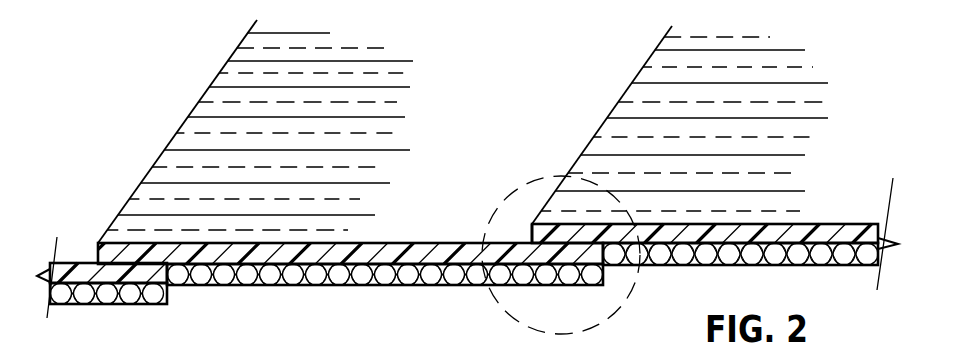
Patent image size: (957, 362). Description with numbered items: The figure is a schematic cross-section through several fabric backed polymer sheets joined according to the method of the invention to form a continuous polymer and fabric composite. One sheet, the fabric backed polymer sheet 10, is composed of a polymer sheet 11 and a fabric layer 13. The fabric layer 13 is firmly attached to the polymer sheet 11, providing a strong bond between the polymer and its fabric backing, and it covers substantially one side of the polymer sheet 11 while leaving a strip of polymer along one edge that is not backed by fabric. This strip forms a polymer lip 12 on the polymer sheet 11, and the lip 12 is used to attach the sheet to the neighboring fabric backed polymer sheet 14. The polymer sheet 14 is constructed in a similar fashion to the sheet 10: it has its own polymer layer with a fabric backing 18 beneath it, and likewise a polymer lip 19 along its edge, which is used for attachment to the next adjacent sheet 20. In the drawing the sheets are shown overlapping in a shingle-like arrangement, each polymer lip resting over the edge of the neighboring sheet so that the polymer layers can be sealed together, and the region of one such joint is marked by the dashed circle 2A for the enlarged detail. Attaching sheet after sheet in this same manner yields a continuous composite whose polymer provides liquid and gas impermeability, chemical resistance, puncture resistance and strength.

The detail area 2A is at (511, 196).
The fabric backed polymer sheet 10 is at (794, 182).
The polymer sheet 11 is at (810, 223).
The polymer lip 12 is at (533, 240).
The fabric layer 13 is at (680, 265).
The fabric backed polymer sheet 14 is at (386, 210).
The fabric backing 18 is at (365, 285).
The polymer lip 19 is at (97, 248).
The adjacent sheet 20 is at (68, 251).